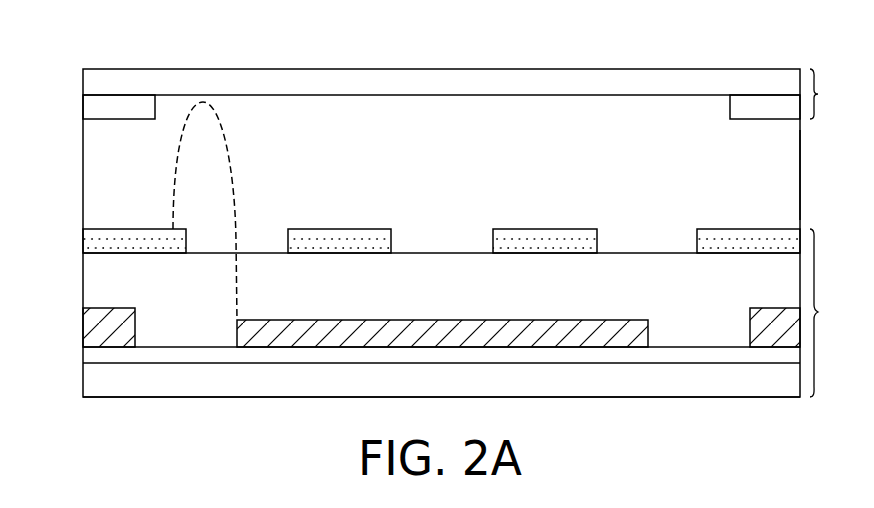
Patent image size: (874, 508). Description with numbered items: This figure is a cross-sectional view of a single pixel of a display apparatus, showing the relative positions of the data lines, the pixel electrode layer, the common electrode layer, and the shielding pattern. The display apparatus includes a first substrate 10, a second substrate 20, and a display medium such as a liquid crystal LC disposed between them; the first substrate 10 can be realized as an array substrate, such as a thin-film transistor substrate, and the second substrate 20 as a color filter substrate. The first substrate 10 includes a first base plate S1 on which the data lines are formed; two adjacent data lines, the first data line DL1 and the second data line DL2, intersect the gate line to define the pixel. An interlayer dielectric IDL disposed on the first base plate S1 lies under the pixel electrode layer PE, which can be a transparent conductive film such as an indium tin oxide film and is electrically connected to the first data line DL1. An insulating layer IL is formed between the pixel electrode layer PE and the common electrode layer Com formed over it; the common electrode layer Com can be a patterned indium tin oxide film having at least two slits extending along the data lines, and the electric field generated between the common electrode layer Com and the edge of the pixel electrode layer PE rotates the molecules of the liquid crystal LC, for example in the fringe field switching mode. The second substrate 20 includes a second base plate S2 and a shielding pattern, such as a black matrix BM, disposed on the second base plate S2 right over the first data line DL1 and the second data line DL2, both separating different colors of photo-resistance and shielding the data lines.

The second base plate S2 is at (738, 82).
The black matrix BM is at (98, 103).
The second substrate 20 is at (829, 94).
The liquid crystal LC is at (783, 170).
The common electrode layer Com is at (96, 239).
The second data line DL2 is at (98, 327).
The pixel electrode layer PE is at (442, 334).
The first data line DL1 is at (775, 333).
The insulating layer IL is at (670, 328).
The interlayer dielectric IDL is at (717, 355).
The first base plate S1 is at (593, 382).
The first substrate 10 is at (829, 313).